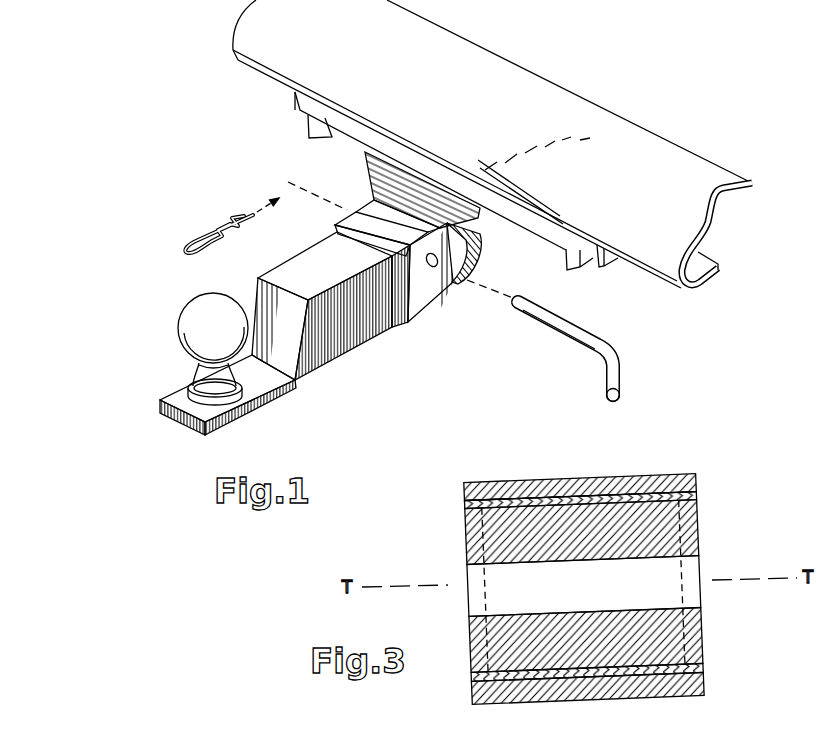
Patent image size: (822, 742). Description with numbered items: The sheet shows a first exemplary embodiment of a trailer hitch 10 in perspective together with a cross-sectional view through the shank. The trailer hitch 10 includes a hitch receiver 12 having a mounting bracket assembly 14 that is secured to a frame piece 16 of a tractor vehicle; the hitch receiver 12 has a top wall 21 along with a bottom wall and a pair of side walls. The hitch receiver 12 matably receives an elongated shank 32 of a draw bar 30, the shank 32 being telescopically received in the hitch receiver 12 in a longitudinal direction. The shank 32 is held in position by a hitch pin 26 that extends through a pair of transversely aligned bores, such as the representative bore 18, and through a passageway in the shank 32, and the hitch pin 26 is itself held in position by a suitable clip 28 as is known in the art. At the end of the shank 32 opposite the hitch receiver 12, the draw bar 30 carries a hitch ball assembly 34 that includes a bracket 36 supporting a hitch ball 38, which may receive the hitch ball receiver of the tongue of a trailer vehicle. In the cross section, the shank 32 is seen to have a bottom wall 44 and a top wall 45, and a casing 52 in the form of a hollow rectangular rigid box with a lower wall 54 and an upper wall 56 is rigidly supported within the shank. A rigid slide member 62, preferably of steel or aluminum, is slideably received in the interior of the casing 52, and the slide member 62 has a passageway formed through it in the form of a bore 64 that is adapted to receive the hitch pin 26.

In FIG. 1, the trailer hitch 10 is at (223, 180).
In FIG. 1, the hitch receiver 12 is at (417, 274).
In FIG. 1, the mounting bracket assembly 14 is at (336, 153).
In FIG. 1, the frame piece 16 is at (580, 112).
In FIG. 1, the bore 18 is at (437, 263).
In FIG. 1, the top wall 21 is at (378, 218).
In FIG. 1, the hitch pin 26 is at (556, 337).
In FIG. 1, the clip 28 is at (170, 253).
In FIG. 1, the draw bar 30 is at (343, 300).
In FIG. 1, the shank 32 is at (314, 281).
In FIG. 1, the hitch ball assembly 34 is at (187, 389).
In FIG. 1, the bracket 36 is at (283, 380).
In FIG. 1, the hitch ball 38 is at (213, 330).
In FIG. 3, the bottom wall 44 is at (623, 698).
In FIG. 3, the top wall 45 is at (537, 480).
In FIG. 3, the casing 52 is at (463, 504).
In FIG. 3, the lower wall 54 is at (572, 700).
In FIG. 3, the upper wall 56 is at (573, 479).
In FIG. 3, the slide member 62 is at (697, 520).
In FIG. 3, the bore 64 is at (572, 594).